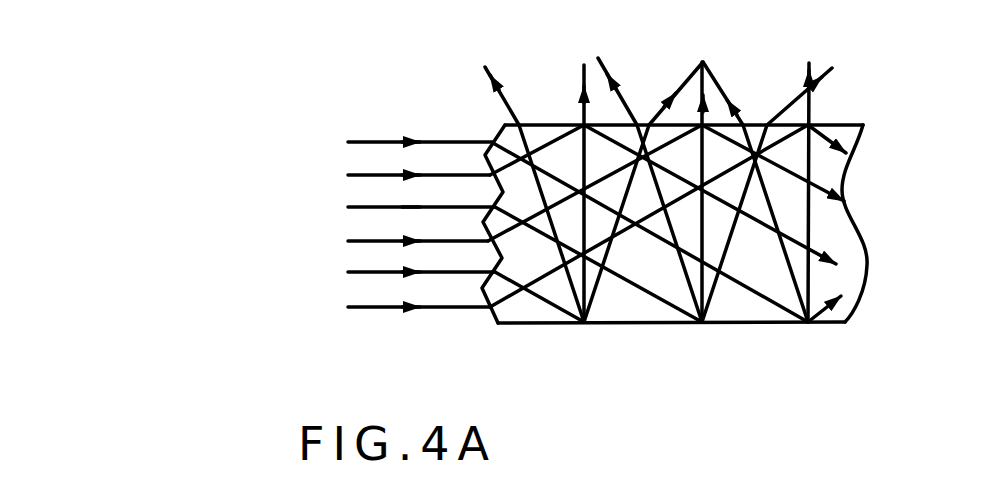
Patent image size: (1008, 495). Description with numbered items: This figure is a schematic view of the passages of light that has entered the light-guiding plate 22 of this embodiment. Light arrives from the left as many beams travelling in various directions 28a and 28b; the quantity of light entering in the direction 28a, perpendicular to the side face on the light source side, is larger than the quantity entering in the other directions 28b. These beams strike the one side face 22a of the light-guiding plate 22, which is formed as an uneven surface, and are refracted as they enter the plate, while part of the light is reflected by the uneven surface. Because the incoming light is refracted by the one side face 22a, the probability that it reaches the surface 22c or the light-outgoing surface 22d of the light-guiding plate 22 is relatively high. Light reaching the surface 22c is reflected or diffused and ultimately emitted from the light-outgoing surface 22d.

The light-guiding plate 22 is at (748, 304).
The one side face 22a is at (496, 131).
The surface 22c is at (800, 325).
The light-outgoing surface 22d is at (828, 124).
The direction perpendicular to the side face 28a is at (306, 218).
The other directions 28b is at (306, 180).